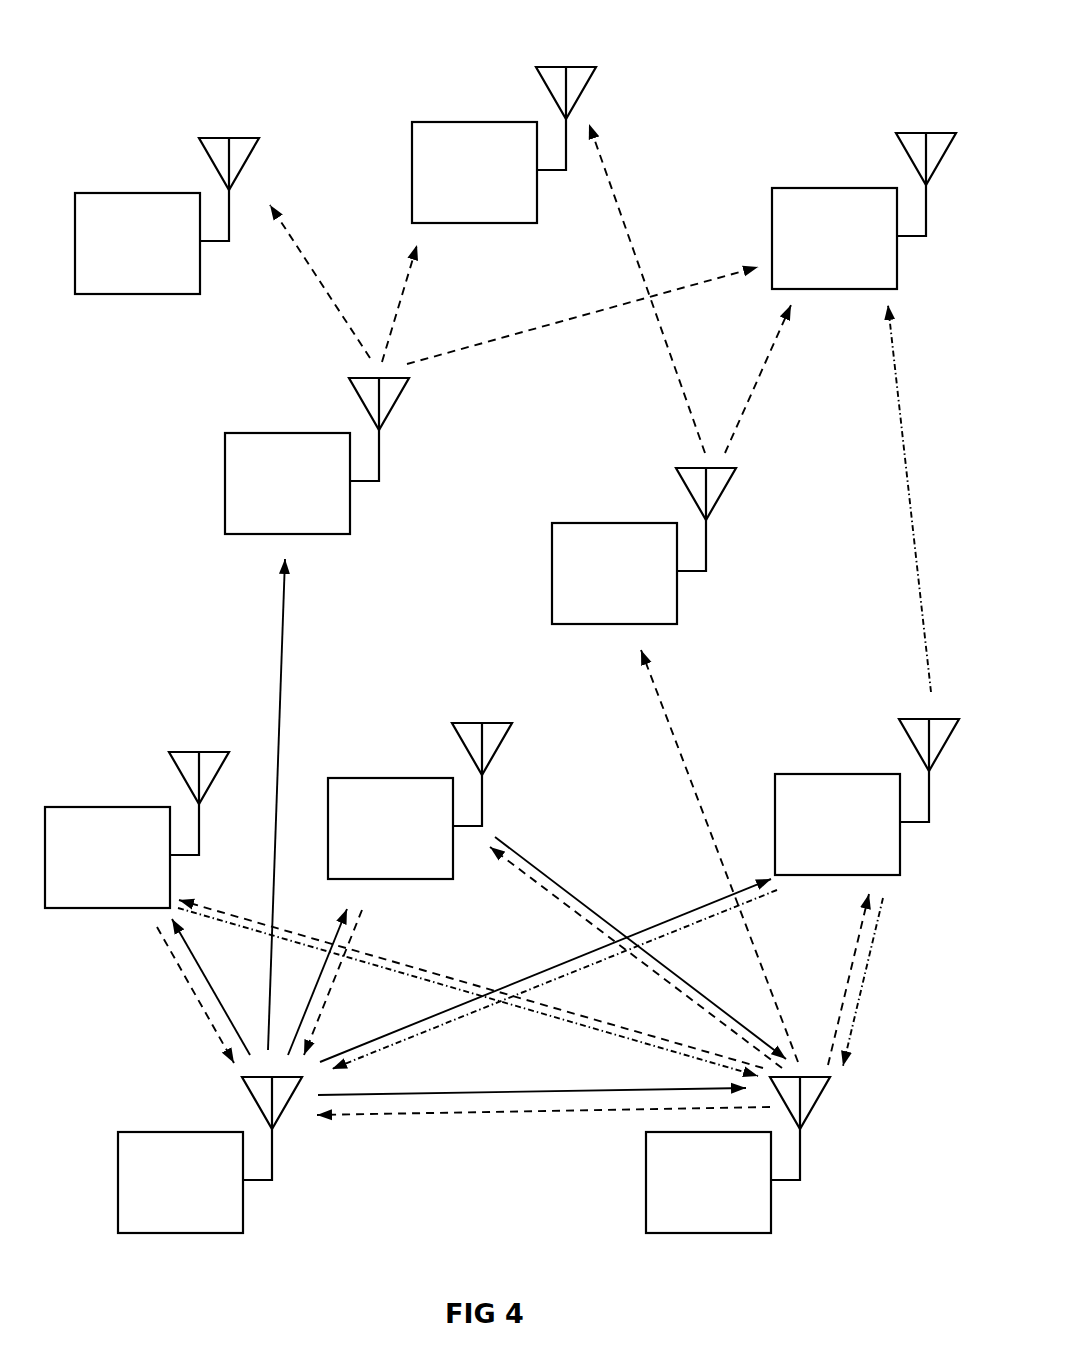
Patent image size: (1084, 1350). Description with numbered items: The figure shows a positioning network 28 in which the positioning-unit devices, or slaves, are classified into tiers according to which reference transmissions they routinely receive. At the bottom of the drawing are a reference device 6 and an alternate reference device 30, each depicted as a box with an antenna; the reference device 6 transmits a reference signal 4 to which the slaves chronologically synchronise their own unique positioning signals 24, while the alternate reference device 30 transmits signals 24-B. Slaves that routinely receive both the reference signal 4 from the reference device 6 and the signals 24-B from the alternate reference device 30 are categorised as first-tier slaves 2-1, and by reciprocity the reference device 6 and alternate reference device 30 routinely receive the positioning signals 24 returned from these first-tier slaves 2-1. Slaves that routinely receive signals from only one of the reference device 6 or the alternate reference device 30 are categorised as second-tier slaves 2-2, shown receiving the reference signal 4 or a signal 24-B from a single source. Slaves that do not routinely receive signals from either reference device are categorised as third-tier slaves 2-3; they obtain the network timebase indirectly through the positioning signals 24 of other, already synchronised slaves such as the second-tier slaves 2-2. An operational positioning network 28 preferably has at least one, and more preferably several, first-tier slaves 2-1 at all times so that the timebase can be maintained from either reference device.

The positioning network 28 is at (322, 66).
The Tier 1 slaves 2-1 is at (88, 876).
The Tier 2 slaves 2-2 is at (268, 502).
The Tier 3 slaves 2-3 is at (118, 262).
The reference device 6 is at (171, 1201).
The alternate reference device 30 is at (692, 1201).
The reference signal 4 is at (280, 668).
The positioning signal 24 is at (330, 298).
The alternate reference device signal 24-B is at (658, 693).